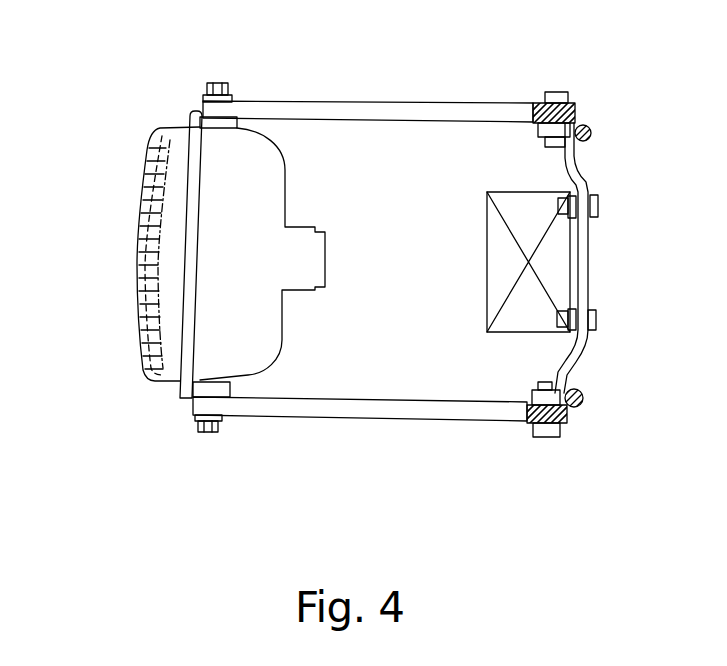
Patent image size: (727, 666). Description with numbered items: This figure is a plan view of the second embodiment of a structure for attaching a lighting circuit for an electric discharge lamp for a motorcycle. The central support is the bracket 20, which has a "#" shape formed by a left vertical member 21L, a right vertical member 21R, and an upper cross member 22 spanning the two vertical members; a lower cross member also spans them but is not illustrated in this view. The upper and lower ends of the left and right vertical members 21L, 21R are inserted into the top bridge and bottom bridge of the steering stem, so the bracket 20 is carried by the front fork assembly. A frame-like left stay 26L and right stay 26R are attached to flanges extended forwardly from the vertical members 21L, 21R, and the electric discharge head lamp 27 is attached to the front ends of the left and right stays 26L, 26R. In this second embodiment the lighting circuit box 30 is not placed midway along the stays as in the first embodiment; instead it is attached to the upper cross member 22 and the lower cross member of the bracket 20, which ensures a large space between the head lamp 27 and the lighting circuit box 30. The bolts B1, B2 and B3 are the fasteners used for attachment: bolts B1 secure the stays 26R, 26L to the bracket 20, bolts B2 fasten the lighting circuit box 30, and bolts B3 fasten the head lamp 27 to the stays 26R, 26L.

The bracket 20 is at (620, 258).
The right vertical member 21R is at (589, 129).
The left vertical member 21L is at (583, 400).
The upper cross member 22 is at (588, 265).
The right stay 26R is at (353, 100).
The left stay 26L is at (398, 421).
The head lamp 27 is at (142, 218).
The lighting circuit box 30 is at (487, 255).
The bolt B1 is at (557, 92).
The bolt B2 is at (558, 208).
The bolt B3 is at (216, 82).